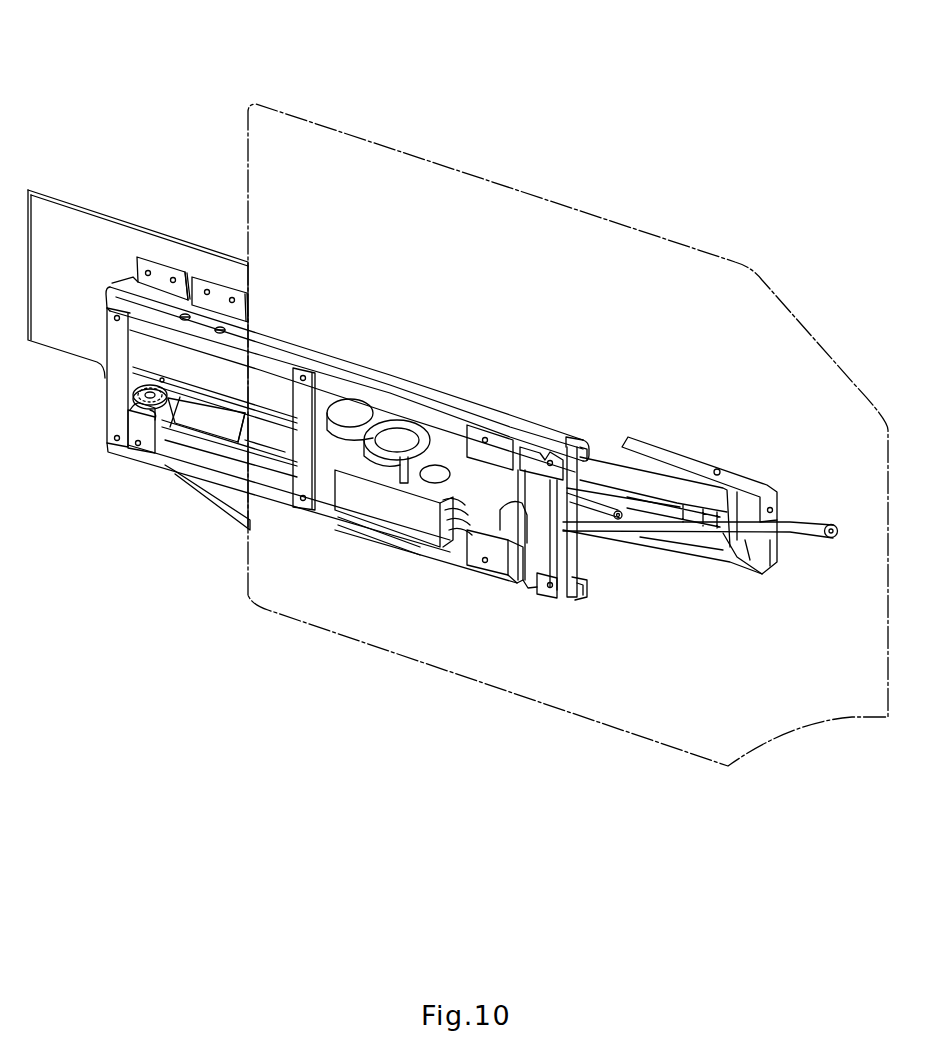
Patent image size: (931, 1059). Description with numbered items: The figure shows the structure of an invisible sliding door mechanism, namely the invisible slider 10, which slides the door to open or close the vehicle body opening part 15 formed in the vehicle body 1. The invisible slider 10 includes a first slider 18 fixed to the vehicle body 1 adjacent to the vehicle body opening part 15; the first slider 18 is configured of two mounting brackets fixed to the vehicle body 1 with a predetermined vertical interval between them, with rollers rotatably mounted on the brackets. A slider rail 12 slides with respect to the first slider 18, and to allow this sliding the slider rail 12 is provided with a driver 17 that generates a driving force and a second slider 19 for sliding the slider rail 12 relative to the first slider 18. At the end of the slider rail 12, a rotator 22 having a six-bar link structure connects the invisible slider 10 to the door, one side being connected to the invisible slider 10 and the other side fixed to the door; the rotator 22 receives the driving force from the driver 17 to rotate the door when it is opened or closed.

The vehicle body 1 is at (80, 217).
The invisible slider 10 is at (393, 57).
The slider rail 12 is at (273, 348).
The vehicle body opening part 15 is at (350, 130).
The driver 17 is at (407, 470).
The first slider 18 is at (162, 274).
The second slider 19 is at (203, 425).
The rotator 22 is at (833, 602).